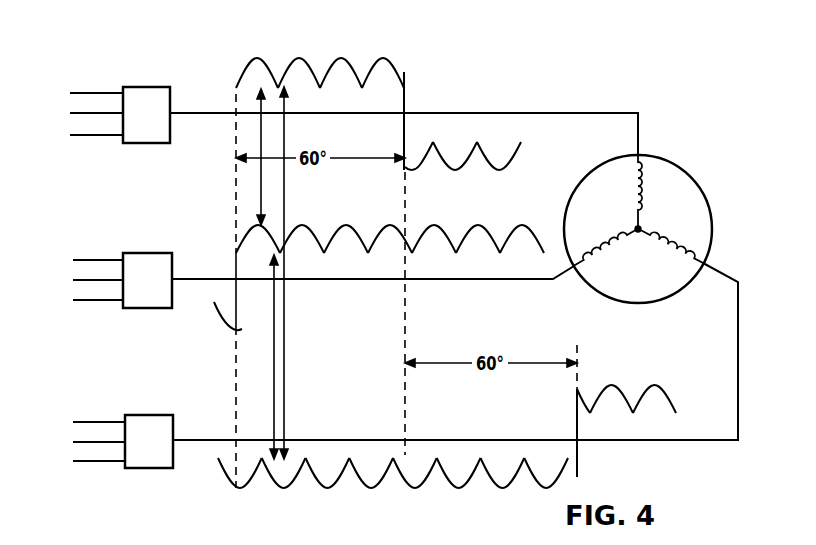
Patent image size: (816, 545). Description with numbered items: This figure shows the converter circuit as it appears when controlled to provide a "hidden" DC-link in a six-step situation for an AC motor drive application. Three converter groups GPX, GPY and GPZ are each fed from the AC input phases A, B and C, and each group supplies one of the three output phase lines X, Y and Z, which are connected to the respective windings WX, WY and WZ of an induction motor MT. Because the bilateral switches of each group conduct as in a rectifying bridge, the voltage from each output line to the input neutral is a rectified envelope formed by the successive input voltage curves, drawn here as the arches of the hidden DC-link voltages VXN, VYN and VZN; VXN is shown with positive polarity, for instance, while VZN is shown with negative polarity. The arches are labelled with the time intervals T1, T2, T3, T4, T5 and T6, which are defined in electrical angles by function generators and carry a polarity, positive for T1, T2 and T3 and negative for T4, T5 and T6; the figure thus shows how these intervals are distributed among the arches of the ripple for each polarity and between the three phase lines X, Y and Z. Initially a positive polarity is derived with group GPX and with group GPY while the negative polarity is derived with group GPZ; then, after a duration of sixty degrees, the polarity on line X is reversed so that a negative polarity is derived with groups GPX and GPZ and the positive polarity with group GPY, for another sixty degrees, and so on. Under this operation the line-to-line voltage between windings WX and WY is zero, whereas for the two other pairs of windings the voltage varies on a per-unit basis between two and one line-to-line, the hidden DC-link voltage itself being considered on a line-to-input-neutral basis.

The group GPX is at (179, 115).
The group GPY is at (179, 280).
The group GPZ is at (180, 441).
The input phase A is at (92, 246).
The input phase B is at (91, 281).
The input phase C is at (94, 313).
The line X is at (568, 109).
The line Y is at (529, 281).
The line Z is at (613, 441).
The induction motor MT is at (741, 181).
The winding WX is at (645, 186).
The winding WY is at (600, 245).
The winding WZ is at (668, 250).
The hidden DC-link voltage VXN is at (358, 60).
The hidden DC-link voltage VYN is at (499, 237).
The hidden DC-link voltage VZN is at (481, 474).
The time interval T1 is at (456, 240).
The time interval T2 is at (577, 408).
The time interval T3 is at (476, 240).
The time interval T4 is at (600, 474).
The time interval T5 is at (214, 334).
The time interval T6 is at (424, 162).